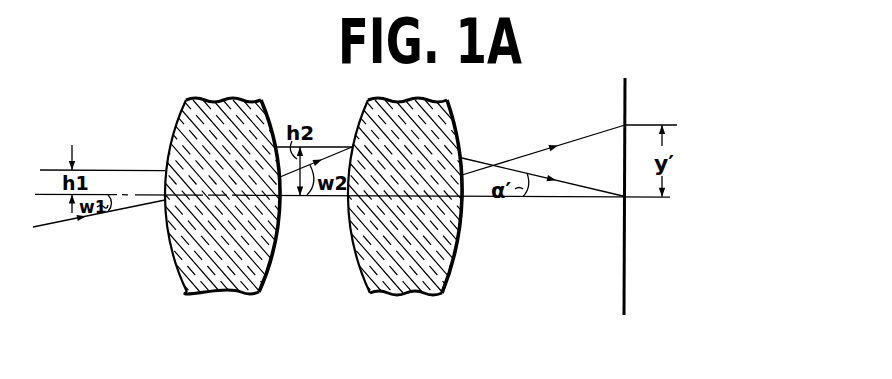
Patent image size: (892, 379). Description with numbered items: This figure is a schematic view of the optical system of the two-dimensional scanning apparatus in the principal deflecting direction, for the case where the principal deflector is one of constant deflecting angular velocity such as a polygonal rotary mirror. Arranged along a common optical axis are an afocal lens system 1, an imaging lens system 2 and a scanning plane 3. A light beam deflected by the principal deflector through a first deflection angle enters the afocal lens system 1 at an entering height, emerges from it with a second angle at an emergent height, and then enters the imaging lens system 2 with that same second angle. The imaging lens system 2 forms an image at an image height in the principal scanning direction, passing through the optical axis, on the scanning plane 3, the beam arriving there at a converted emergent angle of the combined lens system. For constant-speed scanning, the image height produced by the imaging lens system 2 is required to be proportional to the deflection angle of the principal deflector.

The afocal lens system 1 is at (173, 296).
The imaging lens system 2 is at (362, 298).
The scanning plane 3 is at (626, 297).